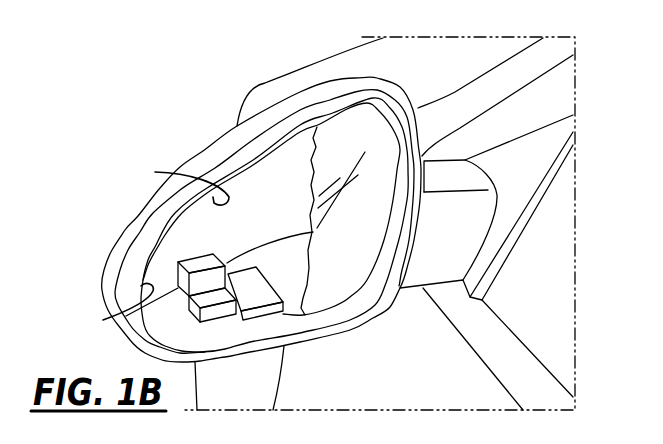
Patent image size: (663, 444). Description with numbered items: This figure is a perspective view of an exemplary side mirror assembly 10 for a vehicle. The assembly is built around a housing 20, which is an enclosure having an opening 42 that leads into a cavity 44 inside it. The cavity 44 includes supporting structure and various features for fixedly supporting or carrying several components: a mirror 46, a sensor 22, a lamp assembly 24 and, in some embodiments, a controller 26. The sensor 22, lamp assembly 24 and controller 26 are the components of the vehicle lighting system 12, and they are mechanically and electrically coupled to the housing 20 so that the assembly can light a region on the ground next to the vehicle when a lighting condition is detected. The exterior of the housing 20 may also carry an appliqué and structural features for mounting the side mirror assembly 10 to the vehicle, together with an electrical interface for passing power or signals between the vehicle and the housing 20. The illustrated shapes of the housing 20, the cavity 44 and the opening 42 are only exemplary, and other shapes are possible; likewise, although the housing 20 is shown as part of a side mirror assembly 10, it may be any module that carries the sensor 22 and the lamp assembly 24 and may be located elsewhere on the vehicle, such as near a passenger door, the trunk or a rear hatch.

The side mirror assembly 10 is at (207, 147).
The lighting system 12 is at (175, 281).
The housing 20 is at (138, 216).
The sensor 22 is at (210, 258).
The lamp assembly 24 is at (203, 320).
The controller 26 is at (260, 285).
The opening 42 is at (197, 286).
The cavity 44 is at (268, 225).
The mirror 46 is at (344, 136).